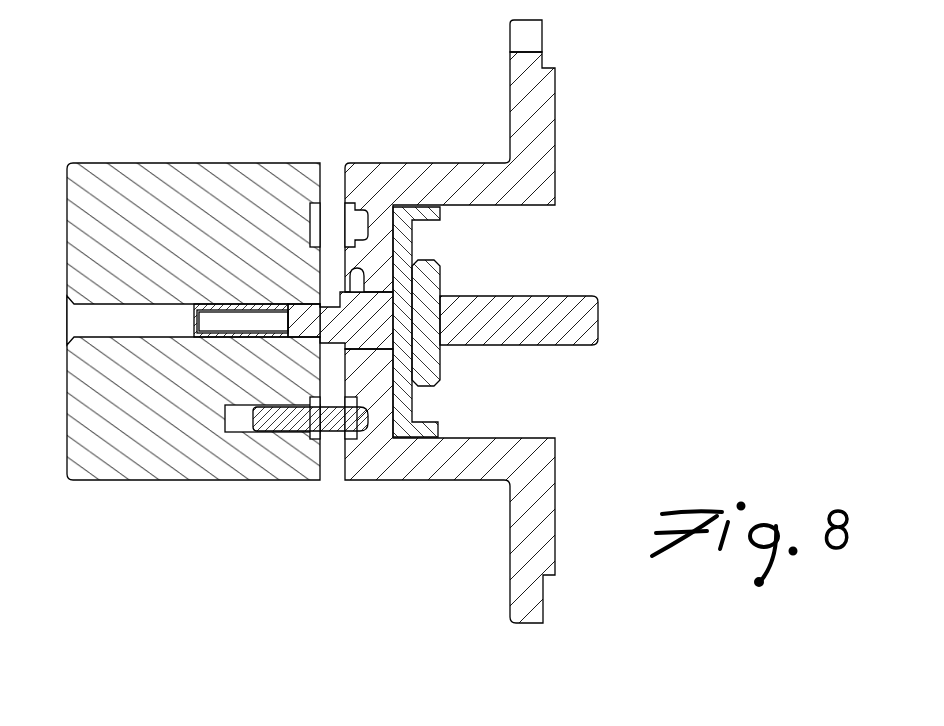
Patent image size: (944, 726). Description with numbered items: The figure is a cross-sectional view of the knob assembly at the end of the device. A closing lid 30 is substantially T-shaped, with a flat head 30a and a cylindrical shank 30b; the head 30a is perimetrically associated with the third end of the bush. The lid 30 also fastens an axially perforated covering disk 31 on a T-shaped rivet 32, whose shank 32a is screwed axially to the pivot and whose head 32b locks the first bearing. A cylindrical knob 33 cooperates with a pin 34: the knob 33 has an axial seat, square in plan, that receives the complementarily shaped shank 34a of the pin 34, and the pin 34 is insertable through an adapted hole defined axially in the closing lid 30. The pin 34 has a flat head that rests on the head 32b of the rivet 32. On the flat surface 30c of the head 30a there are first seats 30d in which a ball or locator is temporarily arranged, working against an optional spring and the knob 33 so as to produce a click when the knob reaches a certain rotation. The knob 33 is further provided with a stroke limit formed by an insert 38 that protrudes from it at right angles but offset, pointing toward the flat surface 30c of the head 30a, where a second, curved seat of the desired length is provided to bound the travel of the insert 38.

The closing lid 30 is at (375, 158).
The flat head 30a is at (527, 93).
The cylindrical shank 30b is at (468, 182).
The flat surface 30c is at (345, 455).
The first seats 30d is at (345, 208).
The covering disk 31 is at (403, 432).
The T-shaped rivet 32 is at (412, 318).
The shank 32a is at (535, 323).
The head 32b is at (430, 382).
The cylindrical knob 33 is at (150, 148).
The pin 34 is at (243, 367).
The shank 34a is at (262, 303).
The insert 38 is at (253, 416).